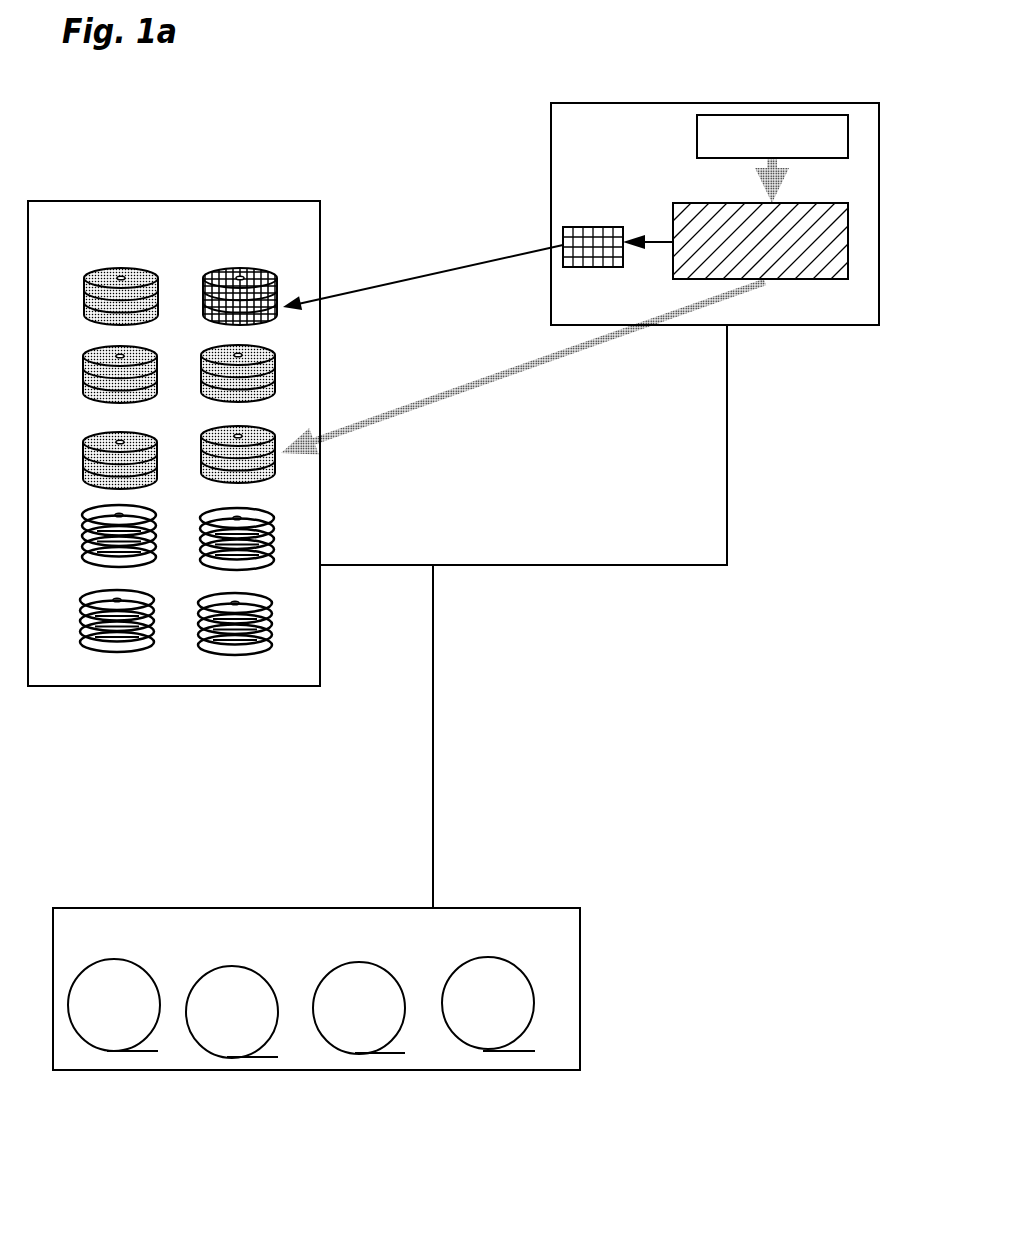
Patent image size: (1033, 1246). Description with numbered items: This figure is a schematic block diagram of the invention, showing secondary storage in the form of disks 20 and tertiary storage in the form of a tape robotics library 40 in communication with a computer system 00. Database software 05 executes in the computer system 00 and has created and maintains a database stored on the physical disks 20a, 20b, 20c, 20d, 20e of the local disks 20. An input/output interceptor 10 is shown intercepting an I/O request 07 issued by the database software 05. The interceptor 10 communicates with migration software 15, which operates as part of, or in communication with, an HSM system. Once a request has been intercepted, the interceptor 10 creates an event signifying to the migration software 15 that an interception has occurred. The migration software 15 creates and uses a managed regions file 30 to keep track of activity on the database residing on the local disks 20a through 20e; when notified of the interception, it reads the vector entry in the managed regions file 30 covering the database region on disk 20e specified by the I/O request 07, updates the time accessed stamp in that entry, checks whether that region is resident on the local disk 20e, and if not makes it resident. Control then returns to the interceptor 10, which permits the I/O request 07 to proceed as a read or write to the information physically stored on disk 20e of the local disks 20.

The computer system 00 is at (550, 117).
The database software 05 is at (782, 120).
The I/O request 07 is at (757, 172).
The input/output interceptor 10 is at (855, 268).
The migration software 15 is at (560, 228).
The disks 20 is at (102, 193).
The physical disk 20a is at (78, 298).
The physical disk 20b is at (83, 385).
The physical disk 20c is at (195, 377).
The physical disk 20d is at (88, 472).
The local disk 20e is at (270, 480).
The managed regions file 30 is at (270, 327).
The tape robotics library 40 is at (145, 903).